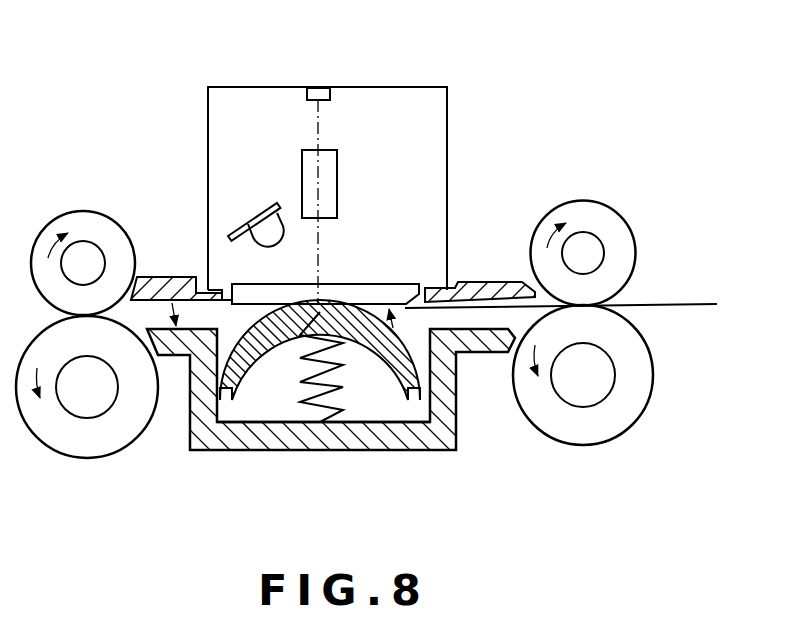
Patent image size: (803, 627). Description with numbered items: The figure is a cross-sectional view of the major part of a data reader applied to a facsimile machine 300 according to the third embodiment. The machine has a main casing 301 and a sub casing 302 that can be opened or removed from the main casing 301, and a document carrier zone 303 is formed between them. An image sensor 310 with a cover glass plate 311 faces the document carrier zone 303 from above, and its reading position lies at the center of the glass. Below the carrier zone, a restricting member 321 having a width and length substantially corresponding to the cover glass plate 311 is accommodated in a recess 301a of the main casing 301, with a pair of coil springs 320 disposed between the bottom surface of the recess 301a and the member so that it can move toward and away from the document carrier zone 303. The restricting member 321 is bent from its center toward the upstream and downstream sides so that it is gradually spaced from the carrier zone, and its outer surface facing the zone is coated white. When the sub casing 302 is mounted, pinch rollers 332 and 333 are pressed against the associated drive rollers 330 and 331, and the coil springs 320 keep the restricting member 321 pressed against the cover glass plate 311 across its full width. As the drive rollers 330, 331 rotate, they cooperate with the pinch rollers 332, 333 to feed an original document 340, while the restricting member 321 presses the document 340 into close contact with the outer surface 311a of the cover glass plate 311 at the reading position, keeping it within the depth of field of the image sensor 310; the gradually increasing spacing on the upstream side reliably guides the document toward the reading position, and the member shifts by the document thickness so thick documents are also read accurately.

The facsimile machine 300 is at (612, 128).
The image sensor 310 is at (205, 135).
The cover glass plate 311 is at (423, 290).
The outer surface of the cover glass plate 311a is at (376, 305).
The sub casing 302 is at (510, 282).
The document carrier zone 303 is at (170, 277).
The original document 340 is at (700, 303).
The main casing 301 is at (493, 355).
The recess 301a is at (420, 430).
The coil springs 320 is at (283, 425).
The restricting member 321 is at (405, 405).
The drive roller 330 is at (646, 408).
The drive roller 331 is at (60, 452).
The pinch roller 332 is at (630, 228).
The pinch roller 333 is at (62, 218).